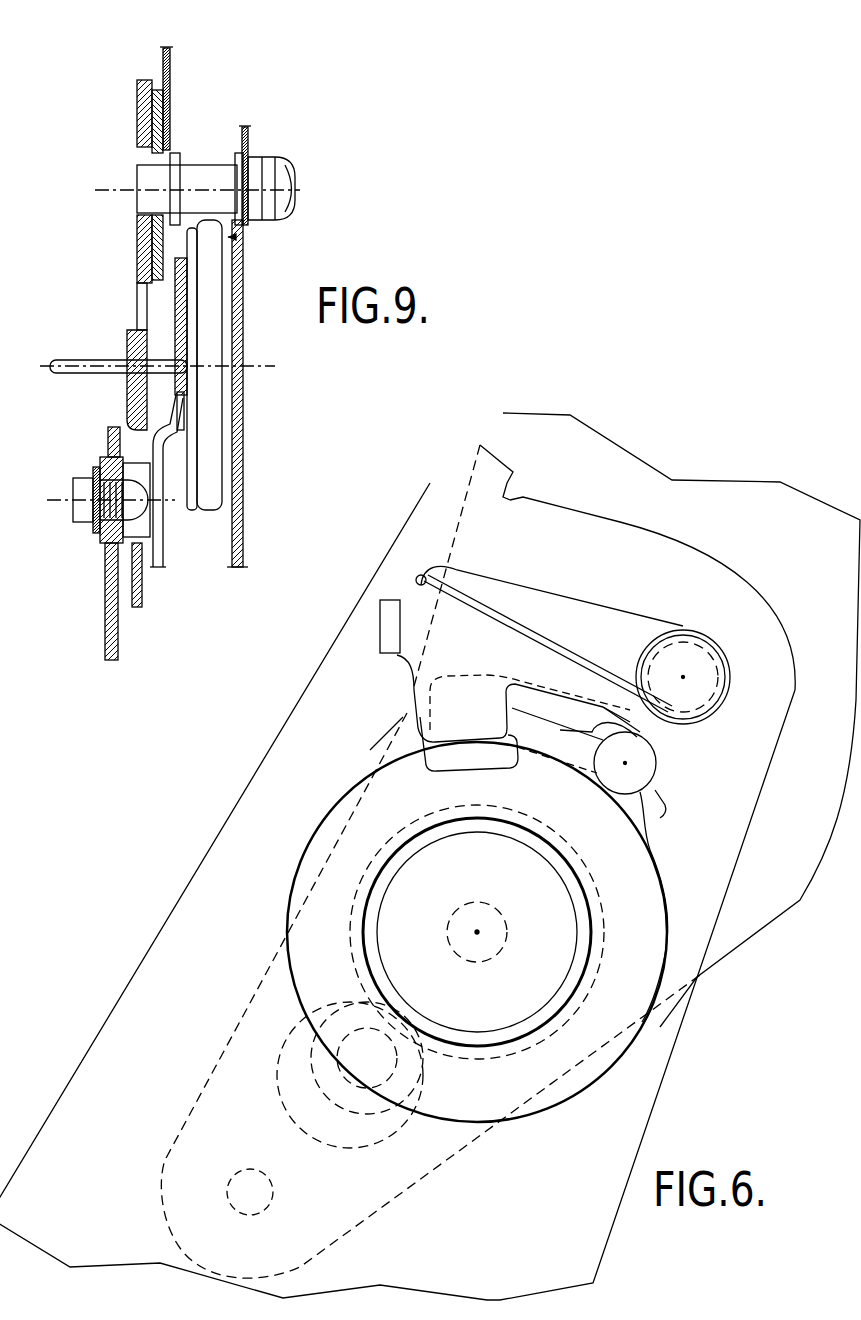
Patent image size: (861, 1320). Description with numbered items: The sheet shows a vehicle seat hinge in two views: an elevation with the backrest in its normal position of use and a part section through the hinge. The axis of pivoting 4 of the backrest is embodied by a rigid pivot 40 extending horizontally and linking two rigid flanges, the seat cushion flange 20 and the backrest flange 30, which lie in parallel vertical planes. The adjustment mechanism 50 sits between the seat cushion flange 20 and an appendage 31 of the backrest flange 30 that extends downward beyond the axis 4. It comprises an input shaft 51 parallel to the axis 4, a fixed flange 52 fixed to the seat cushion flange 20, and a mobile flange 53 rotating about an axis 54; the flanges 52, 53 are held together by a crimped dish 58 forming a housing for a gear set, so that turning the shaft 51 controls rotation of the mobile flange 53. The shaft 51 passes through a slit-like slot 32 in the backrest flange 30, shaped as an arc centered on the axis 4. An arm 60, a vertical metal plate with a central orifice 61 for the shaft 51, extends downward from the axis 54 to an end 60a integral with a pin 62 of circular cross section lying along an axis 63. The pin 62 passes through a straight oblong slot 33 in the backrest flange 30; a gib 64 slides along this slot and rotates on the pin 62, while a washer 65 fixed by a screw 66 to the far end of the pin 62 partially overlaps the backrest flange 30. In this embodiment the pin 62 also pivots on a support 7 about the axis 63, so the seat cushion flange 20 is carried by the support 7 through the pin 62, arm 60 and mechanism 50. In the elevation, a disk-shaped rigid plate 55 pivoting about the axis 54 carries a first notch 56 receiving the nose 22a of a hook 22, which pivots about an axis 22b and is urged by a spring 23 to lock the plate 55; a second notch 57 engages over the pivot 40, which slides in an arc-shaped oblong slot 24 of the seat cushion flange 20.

In FIG. 9, the axis of pivoting 4 is at (100, 185).
In FIG. 6, the axis of pivoting 4 is at (626, 764).
In FIG. 9, the support 7 is at (118, 628).
In FIG. 9, the seat cushion flange 20 is at (243, 140).
In FIG. 6, the seat cushion flange 20 is at (183, 957).
In FIG. 6, the hook 22 is at (610, 620).
In FIG. 6, the nose 22a is at (410, 703).
In FIG. 6, the axis 22b is at (683, 677).
In FIG. 6, the spring 23 is at (570, 657).
In FIG. 6, the oblong slot 24 is at (630, 722).
In FIG. 9, the backrest flange 30 is at (165, 72).
In FIG. 6, the backrest flange 30 is at (800, 563).
In FIG. 9, the appendage 31 is at (137, 245).
In FIG. 9, the slit-like slot 32 is at (123, 358).
In FIG. 9, the oblong slot 33 is at (130, 432).
In FIG. 9, the pivot 40 is at (193, 178).
In FIG. 6, the pivot 40 is at (657, 764).
In FIG. 9, the adjustment mechanism 50 is at (236, 237).
In FIG. 9, the input shaft 51 is at (62, 355).
In FIG. 9, the fixed flange 52 is at (222, 420).
In FIG. 9, the mobile flange 53 is at (188, 305).
In FIG. 9, the axis 54 is at (268, 366).
In FIG. 6, the axis 54 is at (479, 934).
In FIG. 6, the rigid plate 55 is at (603, 1057).
In FIG. 6, the first notch 56 is at (457, 778).
In FIG. 6, the second notch 57 is at (650, 813).
In FIG. 9, the crimped dish 58 is at (208, 277).
In FIG. 9, the arm 60 is at (172, 440).
In FIG. 9, the end 60a is at (162, 563).
In FIG. 9, the central orifice 61 is at (182, 400).
In FIG. 9, the pin 62 is at (143, 520).
In FIG. 9, the axis 63 is at (60, 500).
In FIG. 9, the gib 64 is at (108, 453).
In FIG. 9, the washer 65 is at (95, 530).
In FIG. 9, the screw 66 is at (84, 478).